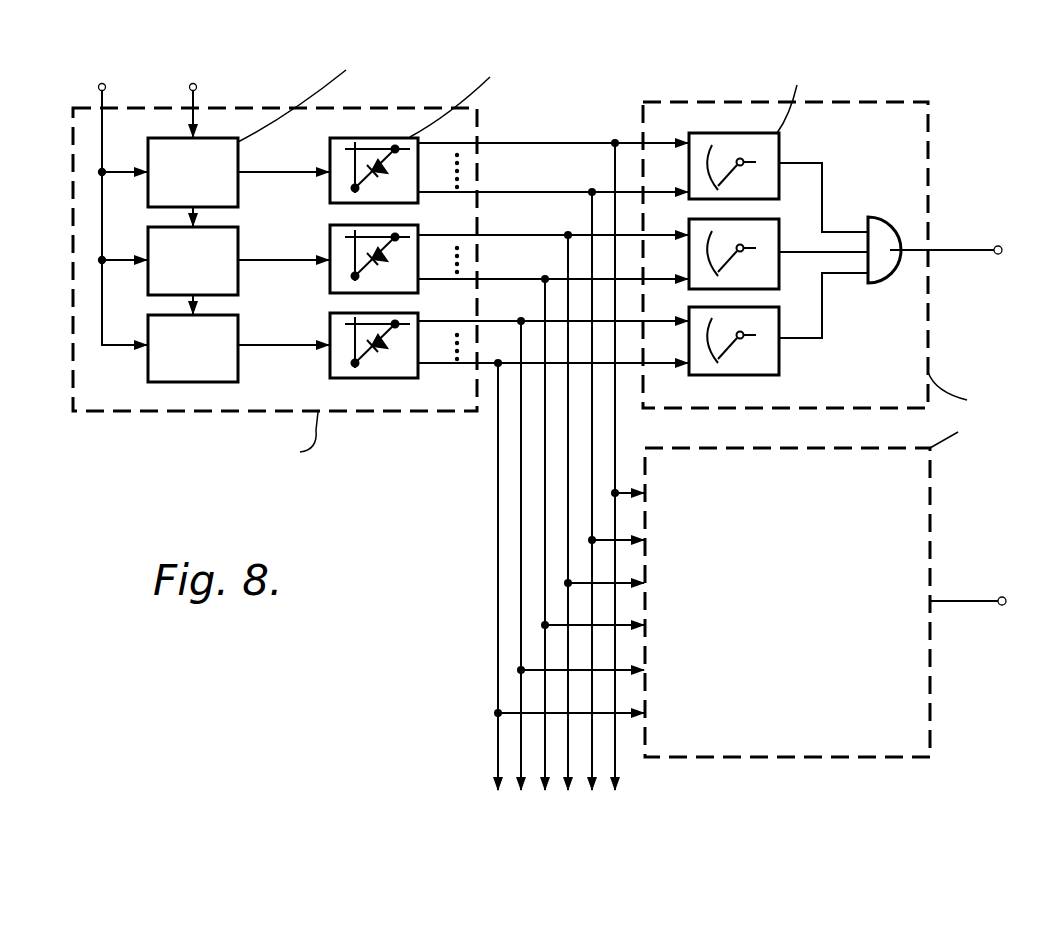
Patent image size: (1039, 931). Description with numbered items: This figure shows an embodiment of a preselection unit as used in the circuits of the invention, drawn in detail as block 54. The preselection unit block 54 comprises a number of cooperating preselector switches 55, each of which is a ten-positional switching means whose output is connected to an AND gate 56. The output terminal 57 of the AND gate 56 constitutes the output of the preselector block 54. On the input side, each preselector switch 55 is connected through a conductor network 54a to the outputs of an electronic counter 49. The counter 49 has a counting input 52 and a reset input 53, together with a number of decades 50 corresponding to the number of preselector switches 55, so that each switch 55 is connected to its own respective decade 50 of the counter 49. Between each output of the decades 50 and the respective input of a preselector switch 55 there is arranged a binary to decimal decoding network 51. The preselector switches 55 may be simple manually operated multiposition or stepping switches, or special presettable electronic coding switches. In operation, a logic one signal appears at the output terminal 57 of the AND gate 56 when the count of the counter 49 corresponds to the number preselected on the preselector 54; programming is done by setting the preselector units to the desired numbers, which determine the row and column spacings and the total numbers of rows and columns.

The electronic counter 49 is at (300, 393).
The decade 50 is at (148, 378).
The binary to decimal decoding network 51 is at (402, 380).
The counting input 52 is at (190, 84).
The reset input 53 is at (112, 72).
The preselection unit block 54 is at (888, 378).
The conductor network 54a is at (486, 491).
The preselector switch 55 is at (779, 148).
The AND gate 56 is at (876, 217).
The output terminal 57 is at (1005, 232).